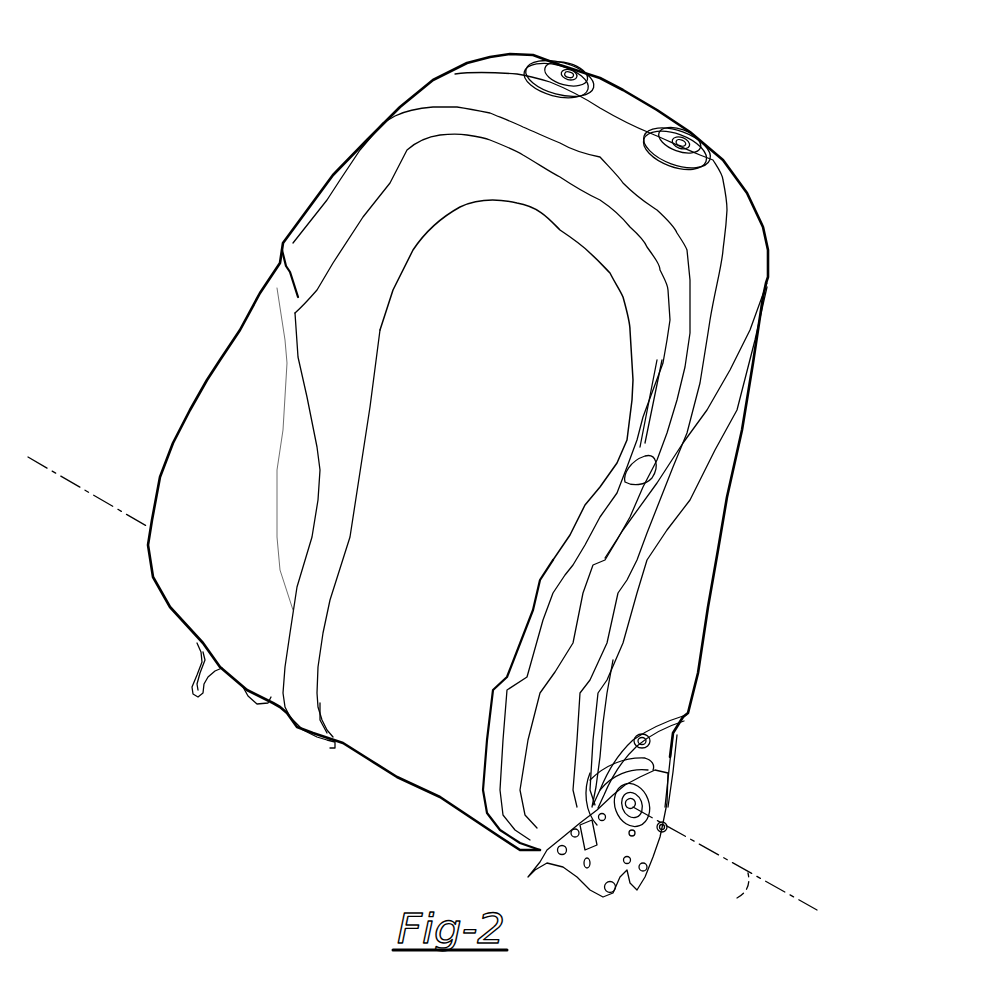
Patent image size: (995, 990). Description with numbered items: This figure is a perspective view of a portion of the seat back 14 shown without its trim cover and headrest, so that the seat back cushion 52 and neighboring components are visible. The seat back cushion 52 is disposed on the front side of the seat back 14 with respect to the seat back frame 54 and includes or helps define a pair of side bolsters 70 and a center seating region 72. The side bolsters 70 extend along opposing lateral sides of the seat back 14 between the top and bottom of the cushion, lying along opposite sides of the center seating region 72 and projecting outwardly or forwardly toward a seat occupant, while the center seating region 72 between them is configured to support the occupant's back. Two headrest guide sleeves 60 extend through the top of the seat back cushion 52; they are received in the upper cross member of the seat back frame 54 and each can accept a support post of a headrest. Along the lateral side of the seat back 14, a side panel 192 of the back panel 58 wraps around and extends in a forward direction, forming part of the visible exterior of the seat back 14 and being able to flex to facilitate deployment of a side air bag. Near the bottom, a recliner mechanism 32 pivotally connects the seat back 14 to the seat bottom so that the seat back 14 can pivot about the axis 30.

The seat back 14 is at (262, 172).
The seat back cushion 52 is at (330, 180).
The headrest guide sleeve 60 is at (680, 137).
The side bolster 70 is at (188, 410).
The center seating region 72 is at (486, 434).
The back panel 58 is at (720, 521).
The side panel 192 is at (650, 618).
The seat back frame 54 is at (660, 745).
The recliner mechanism 32 is at (627, 808).
The axis 30 is at (737, 898).